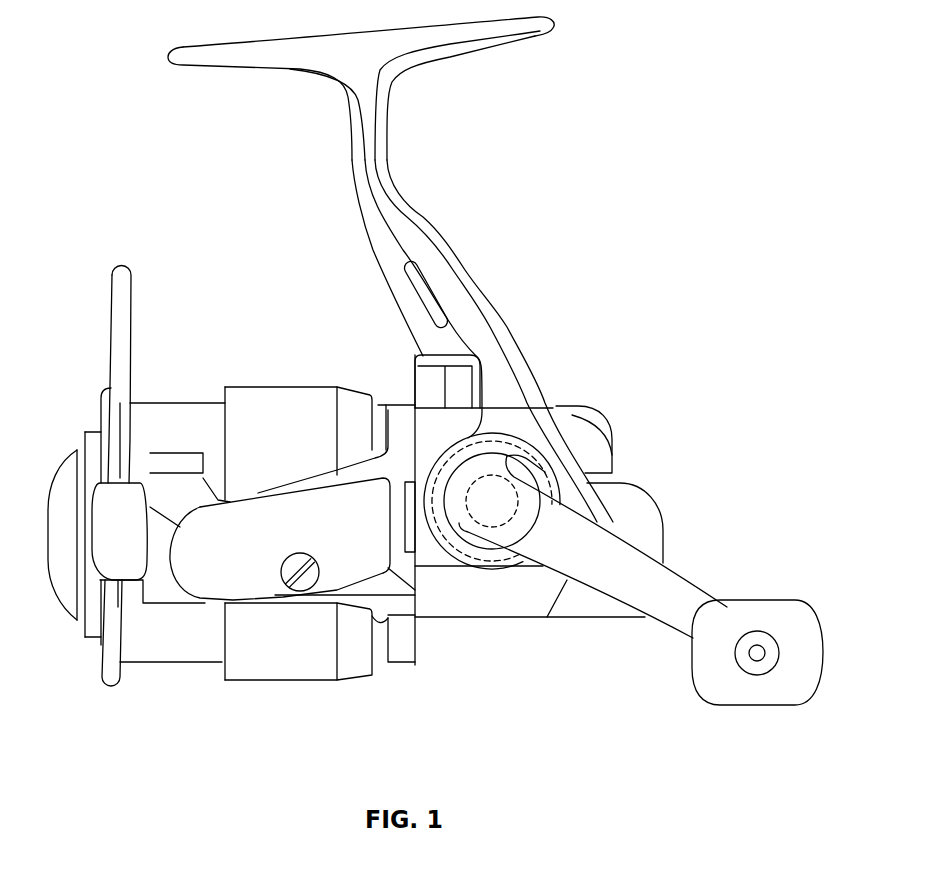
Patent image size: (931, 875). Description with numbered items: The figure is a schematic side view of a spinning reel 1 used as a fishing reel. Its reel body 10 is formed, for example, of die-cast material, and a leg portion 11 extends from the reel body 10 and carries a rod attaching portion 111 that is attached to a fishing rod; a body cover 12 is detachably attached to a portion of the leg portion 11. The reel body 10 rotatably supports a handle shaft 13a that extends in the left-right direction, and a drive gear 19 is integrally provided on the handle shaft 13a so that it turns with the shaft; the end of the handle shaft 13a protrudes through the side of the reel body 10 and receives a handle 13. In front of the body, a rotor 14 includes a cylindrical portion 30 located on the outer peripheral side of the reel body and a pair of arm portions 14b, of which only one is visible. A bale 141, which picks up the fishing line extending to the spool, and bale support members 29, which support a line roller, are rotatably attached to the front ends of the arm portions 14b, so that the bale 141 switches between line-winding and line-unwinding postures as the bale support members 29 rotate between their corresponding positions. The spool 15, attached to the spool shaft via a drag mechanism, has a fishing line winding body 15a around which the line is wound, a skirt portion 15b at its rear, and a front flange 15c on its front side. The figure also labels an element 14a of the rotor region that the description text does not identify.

The spinning reel 1 is at (641, 124).
The reel body 10 is at (643, 514).
The leg portion 11 is at (487, 330).
The rod attaching portion 111 is at (517, 38).
The body cover 12 is at (520, 418).
The handle 13 is at (653, 606).
The handle shaft 13a is at (514, 480).
The rotor 14 is at (400, 667).
The rotor cylindrical portion 14a is at (402, 425).
The arm portions 14b is at (220, 568).
The bale 141 is at (122, 316).
The spool 15 is at (267, 672).
The fishing line winding body 15a is at (165, 422).
The skirt portion 15b is at (252, 410).
The front flange 15c is at (112, 681).
The drive gear 19 is at (462, 566).
The bale support members 29 is at (150, 570).
The cylindrical portion 30 is at (378, 646).